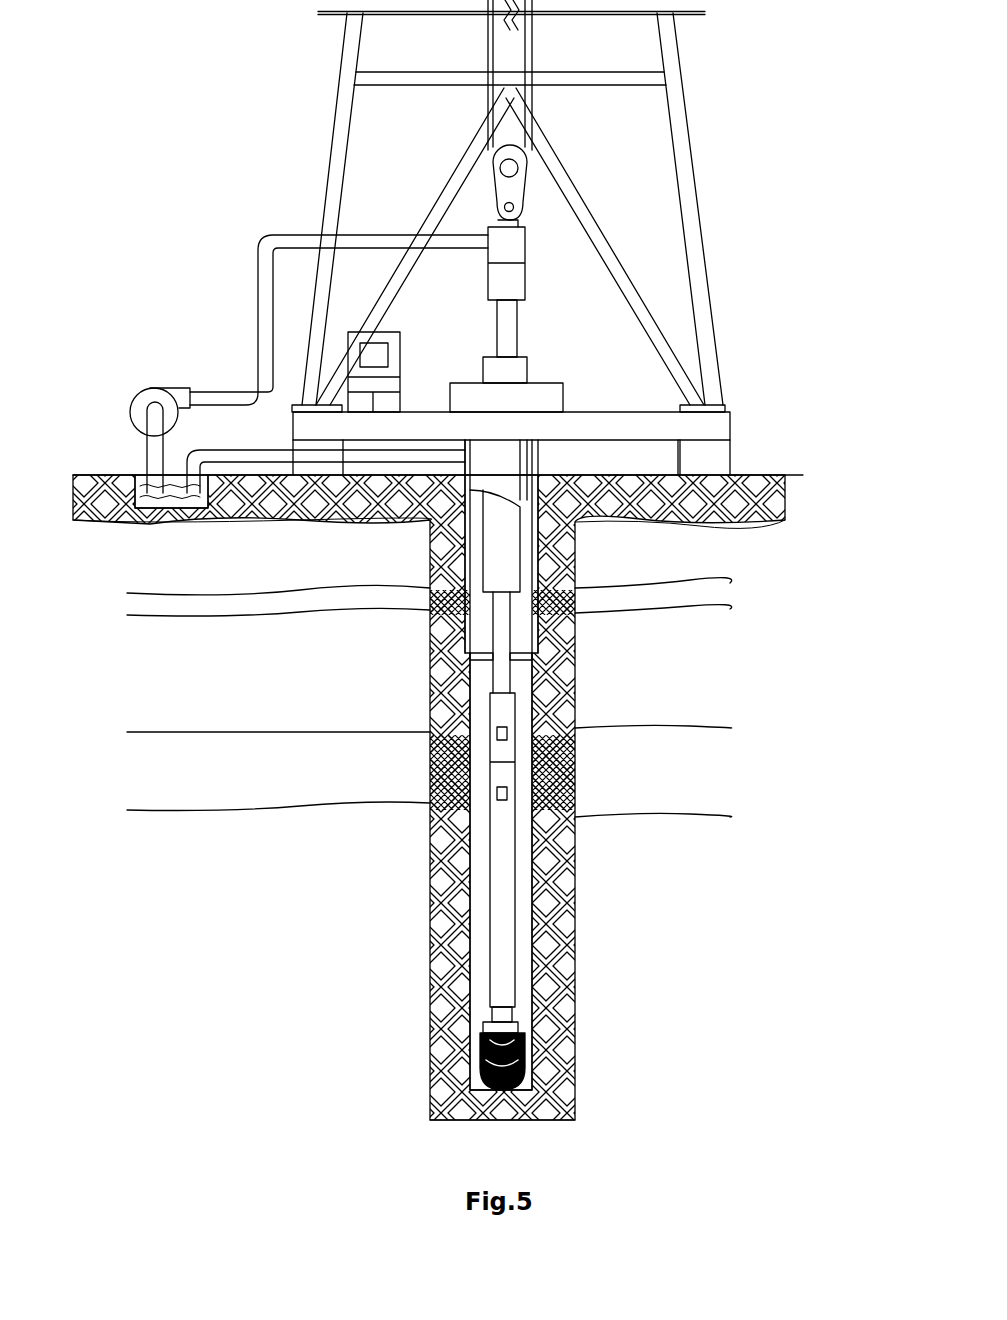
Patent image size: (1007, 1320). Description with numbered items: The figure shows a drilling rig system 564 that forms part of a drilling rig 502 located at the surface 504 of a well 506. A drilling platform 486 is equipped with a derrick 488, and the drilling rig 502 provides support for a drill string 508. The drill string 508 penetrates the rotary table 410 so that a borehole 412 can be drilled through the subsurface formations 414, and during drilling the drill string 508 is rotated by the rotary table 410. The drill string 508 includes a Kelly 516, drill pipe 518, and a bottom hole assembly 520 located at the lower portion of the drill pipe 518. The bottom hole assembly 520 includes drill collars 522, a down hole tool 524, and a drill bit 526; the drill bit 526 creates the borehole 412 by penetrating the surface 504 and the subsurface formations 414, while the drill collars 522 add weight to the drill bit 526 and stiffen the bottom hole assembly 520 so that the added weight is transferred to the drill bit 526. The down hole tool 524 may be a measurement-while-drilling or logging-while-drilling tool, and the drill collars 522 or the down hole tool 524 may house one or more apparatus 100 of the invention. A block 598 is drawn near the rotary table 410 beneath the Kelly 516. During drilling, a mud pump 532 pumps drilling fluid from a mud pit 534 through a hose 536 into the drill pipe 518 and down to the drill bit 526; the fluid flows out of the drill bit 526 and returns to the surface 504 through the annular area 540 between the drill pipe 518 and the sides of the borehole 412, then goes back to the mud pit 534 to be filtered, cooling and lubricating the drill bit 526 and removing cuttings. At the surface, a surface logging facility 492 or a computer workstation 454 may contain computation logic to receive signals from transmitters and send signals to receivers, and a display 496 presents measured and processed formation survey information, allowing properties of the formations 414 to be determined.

The drilling rig system 564 is at (250, 142).
The derrick 488 is at (683, 100).
The drilling rig 502 is at (695, 175).
The hose 536 is at (258, 285).
The mud pump 532 is at (158, 386).
The mud pit 534 is at (157, 507).
The surface logging facility 492 is at (393, 325).
The computer workstation 454 is at (403, 348).
The display 496 is at (389, 355).
The Kelly 516 is at (517, 322).
The rotary table 598 is at (530, 372).
The rotary table 410 is at (565, 398).
The drilling platform 486 is at (733, 418).
The surface 504 is at (756, 475).
The well 506 is at (544, 471).
The drill collars 522 is at (520, 578).
The drill pipe 518 is at (500, 656).
The annular area 540 is at (520, 683).
The apparatus 100 is at (507, 733).
The drill string 508 is at (583, 790).
The borehole 412 is at (536, 950).
The down hole tool 524 is at (505, 992).
The drill bit 526 is at (520, 1040).
The subsurface formations 414 is at (113, 589).
The bottom hole assembly 520 is at (405, 650).